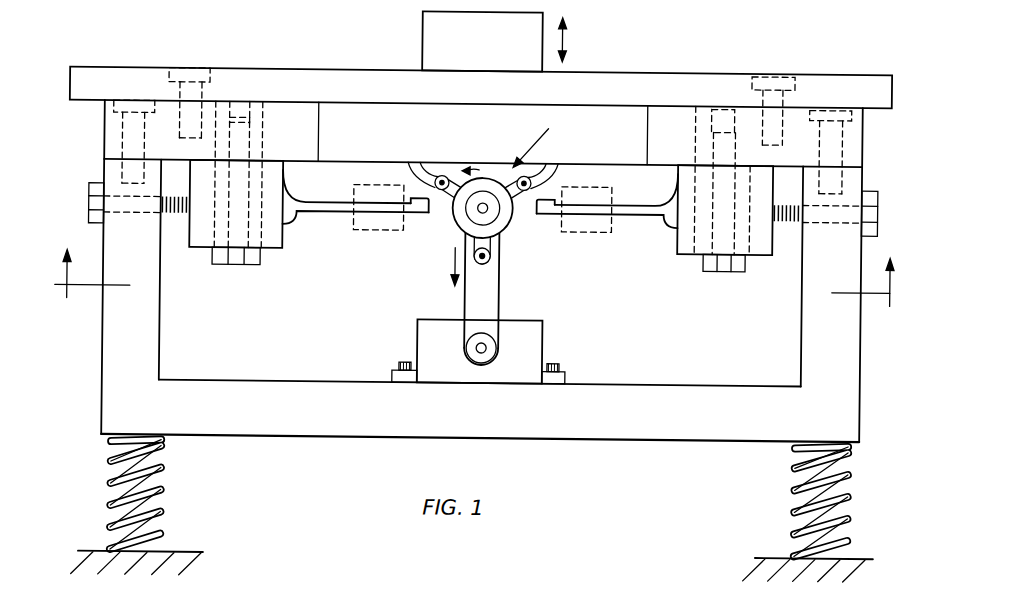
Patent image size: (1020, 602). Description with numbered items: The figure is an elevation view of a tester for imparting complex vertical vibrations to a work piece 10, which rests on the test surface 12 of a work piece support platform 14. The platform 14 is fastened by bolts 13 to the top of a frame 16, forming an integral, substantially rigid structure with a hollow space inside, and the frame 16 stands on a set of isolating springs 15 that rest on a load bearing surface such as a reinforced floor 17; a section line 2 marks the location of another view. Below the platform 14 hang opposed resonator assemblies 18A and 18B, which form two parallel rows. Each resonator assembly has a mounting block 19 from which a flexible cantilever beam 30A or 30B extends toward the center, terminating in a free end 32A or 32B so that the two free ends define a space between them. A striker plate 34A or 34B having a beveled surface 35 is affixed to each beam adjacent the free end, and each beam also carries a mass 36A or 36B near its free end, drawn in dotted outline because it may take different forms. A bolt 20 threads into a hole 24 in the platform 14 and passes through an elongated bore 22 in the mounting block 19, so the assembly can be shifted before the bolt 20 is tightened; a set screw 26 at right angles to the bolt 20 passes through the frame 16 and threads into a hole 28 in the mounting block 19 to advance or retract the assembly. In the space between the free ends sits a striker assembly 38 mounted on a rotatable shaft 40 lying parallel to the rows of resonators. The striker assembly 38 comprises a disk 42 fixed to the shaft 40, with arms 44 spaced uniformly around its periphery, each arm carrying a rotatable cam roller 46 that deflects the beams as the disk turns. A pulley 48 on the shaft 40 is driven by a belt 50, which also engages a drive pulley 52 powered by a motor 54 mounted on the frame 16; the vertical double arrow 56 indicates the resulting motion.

The section line 2 is at (480, 284).
The work piece 10 is at (420, 44).
The test surface 12 is at (669, 72).
The bolts 13 is at (118, 137).
The work piece support platform 14 is at (732, 82).
The isolating springs 15 is at (168, 491).
The frame 16 is at (105, 347).
The reinforced floor 17 is at (182, 555).
The resonator assembly 18A is at (325, 241).
The resonator assembly 18B is at (604, 253).
The mounting block 19 is at (757, 253).
The bolt 20 is at (722, 238).
The bore 22 is at (700, 240).
The hole 24 is at (724, 118).
The set screw 26 is at (171, 200).
The hole 28 is at (758, 220).
The cantilever beam 30A is at (343, 200).
The cantilever beam 30B is at (624, 200).
The free end 32A is at (433, 212).
The free end 32B is at (533, 215).
The striker plate 34A is at (410, 162).
The striker plate 34B is at (560, 217).
The beveled surface 35 is at (407, 150).
The mass 36A is at (349, 214).
The mass 36B is at (617, 217).
The striker assembly 38 is at (548, 136).
The rotatable shaft 40 is at (482, 203).
The disk 42 is at (500, 187).
The arms 44 is at (449, 180).
The cam roller 46 is at (437, 177).
The pulley 48 is at (478, 200).
The belt 50 is at (463, 298).
The drive pulley 52 is at (492, 352).
The motor 54 is at (545, 343).
The vertical motion arrow 56 is at (574, 40).